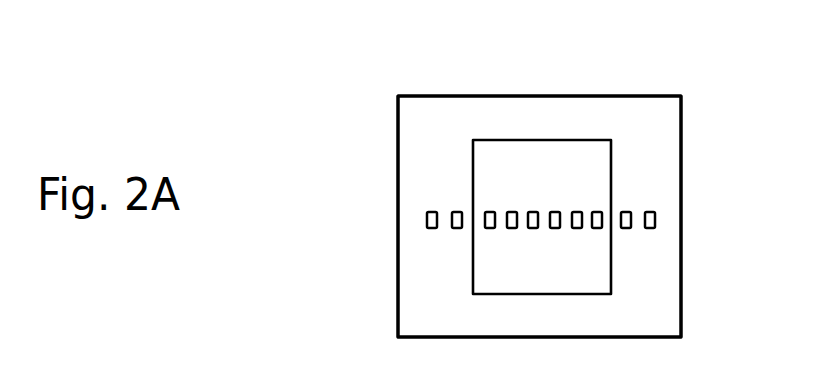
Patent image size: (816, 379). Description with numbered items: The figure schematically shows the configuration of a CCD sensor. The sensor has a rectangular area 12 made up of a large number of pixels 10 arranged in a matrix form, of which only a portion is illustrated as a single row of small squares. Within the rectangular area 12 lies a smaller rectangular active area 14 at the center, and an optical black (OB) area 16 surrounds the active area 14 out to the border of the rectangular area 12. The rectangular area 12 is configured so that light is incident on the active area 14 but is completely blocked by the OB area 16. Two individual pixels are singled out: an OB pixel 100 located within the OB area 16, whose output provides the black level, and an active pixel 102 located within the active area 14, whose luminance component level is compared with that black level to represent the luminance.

The pixels 10 is at (490, 209).
The rectangular area 12 is at (617, 95).
The active area 14 is at (532, 148).
The optical black (OB) area 16 is at (658, 150).
The OB pixel 100 is at (652, 228).
The active pixel 102 is at (593, 227).